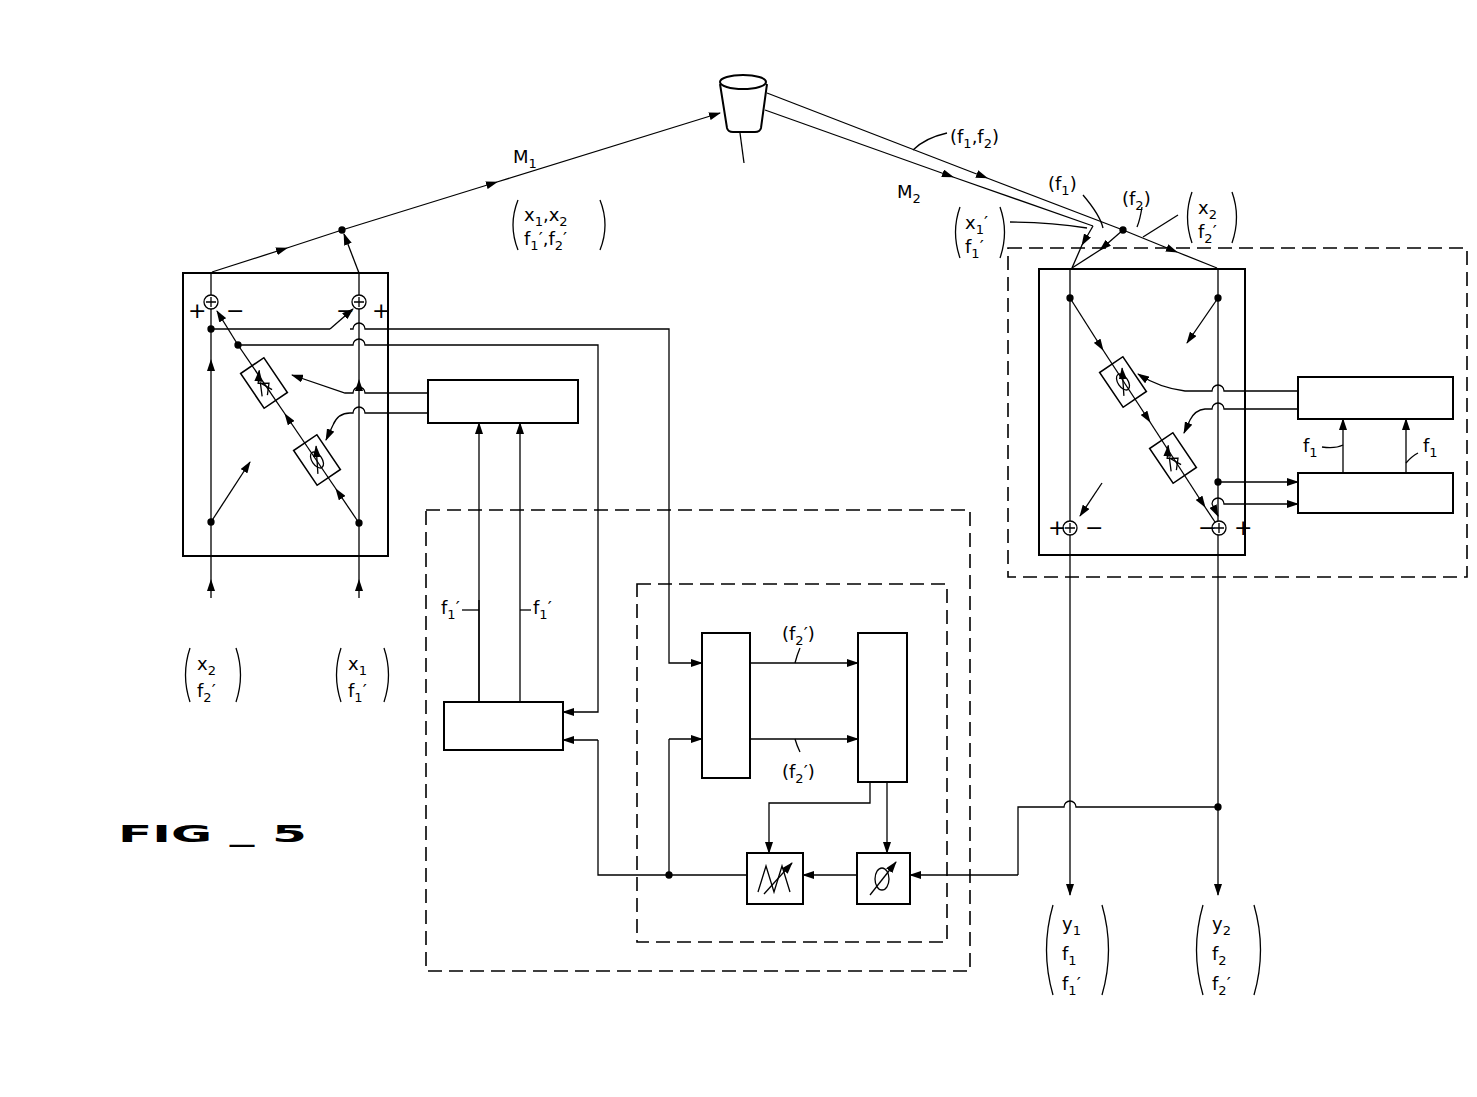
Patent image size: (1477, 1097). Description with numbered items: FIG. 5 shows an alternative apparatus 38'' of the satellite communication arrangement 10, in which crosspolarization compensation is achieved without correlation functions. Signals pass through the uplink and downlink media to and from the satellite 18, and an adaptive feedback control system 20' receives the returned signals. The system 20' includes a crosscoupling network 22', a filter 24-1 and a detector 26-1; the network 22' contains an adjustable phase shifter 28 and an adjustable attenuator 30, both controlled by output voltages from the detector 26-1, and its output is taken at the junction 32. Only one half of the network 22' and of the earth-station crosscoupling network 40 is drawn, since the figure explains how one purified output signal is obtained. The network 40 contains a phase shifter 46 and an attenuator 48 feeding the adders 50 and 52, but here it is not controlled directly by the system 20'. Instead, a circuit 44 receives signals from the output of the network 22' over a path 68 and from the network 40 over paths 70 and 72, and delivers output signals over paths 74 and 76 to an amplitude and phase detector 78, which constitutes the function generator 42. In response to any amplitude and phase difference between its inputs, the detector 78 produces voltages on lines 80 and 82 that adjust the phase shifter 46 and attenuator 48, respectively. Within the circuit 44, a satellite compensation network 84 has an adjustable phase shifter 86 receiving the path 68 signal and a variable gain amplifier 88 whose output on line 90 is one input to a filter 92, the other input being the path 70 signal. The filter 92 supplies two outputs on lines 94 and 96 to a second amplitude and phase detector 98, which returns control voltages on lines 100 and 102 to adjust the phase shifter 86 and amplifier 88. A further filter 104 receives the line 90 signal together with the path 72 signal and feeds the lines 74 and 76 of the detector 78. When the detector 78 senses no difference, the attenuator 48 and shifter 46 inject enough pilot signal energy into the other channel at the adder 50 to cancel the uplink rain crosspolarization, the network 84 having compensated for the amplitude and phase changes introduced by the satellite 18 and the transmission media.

The measuring system 10 is at (1068, 128).
The satellite 18 is at (748, 135).
The adaptive feedback control system 20' is at (1237, 391).
The crosscoupling network 22' is at (1193, 560).
The filter 24-1 is at (1325, 514).
The detector 26-1 is at (1400, 362).
The adjustable phase shifter 28 is at (1130, 365).
The adjustable attenuator 30 is at (1165, 478).
The summing circuit 32 is at (1211, 531).
The alternative apparatus 38'' is at (466, 193).
The crosscoupling network 40 is at (183, 458).
The function generator 42 is at (460, 376).
The circuit 44 is at (426, 930).
The phase shifter 46 is at (312, 480).
The attenuator 48 is at (262, 406).
The adder 50 is at (218, 301).
The adder 52 is at (352, 301).
The path 68 is at (1143, 807).
The path 70 is at (628, 329).
The path 72 is at (600, 410).
The path 74 is at (479, 485).
The path 76 is at (520, 484).
The amplitude and phase detector 78 is at (515, 380).
The path 80 is at (335, 428).
The path 82 is at (288, 378).
The satellite compensation network 84 is at (810, 584).
The adjustable phase shifter 86 is at (903, 905).
The variable gain amplifier 88 is at (755, 905).
The line 90 is at (708, 880).
The filter 92 is at (727, 633).
The line 94 is at (760, 665).
The line 96 is at (780, 738).
The amplitude and phase detector 98 is at (870, 633).
The line 100 is at (882, 825).
The line 102 is at (765, 819).
The filter 104 is at (512, 752).